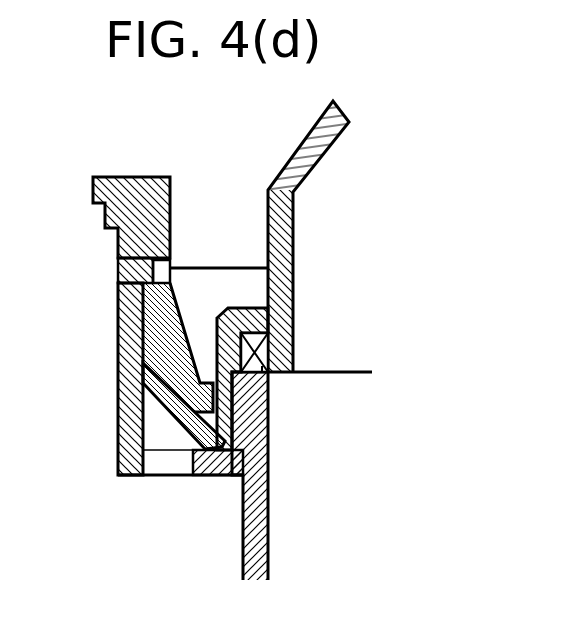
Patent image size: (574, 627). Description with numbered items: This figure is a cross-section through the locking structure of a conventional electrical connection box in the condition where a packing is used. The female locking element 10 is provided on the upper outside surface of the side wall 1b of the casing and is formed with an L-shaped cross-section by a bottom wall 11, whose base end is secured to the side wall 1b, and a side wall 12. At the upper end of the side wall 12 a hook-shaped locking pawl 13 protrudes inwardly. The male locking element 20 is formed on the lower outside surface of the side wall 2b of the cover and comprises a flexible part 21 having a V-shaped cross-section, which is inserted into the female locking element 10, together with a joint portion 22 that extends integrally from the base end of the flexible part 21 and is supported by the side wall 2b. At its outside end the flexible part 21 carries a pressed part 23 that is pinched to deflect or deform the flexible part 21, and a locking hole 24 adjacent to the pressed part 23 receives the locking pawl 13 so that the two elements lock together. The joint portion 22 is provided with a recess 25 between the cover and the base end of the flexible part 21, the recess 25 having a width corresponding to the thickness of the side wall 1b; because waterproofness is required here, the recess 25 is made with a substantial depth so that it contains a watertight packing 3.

The male locking element 20 is at (214, 185).
The side wall of the cover 2b is at (303, 138).
The pressed part 23 is at (93, 187).
The locking hole 24 is at (175, 270).
The locking pawl 13 is at (125, 268).
The joint portion 22 is at (270, 308).
The watertight packing 3 is at (268, 352).
The recess 25 is at (268, 372).
The female locking element 10 is at (101, 388).
The side wall 12 is at (118, 463).
The flexible part 21 is at (190, 410).
The bottom wall 11 is at (201, 452).
The side wall of the casing 1b is at (268, 505).